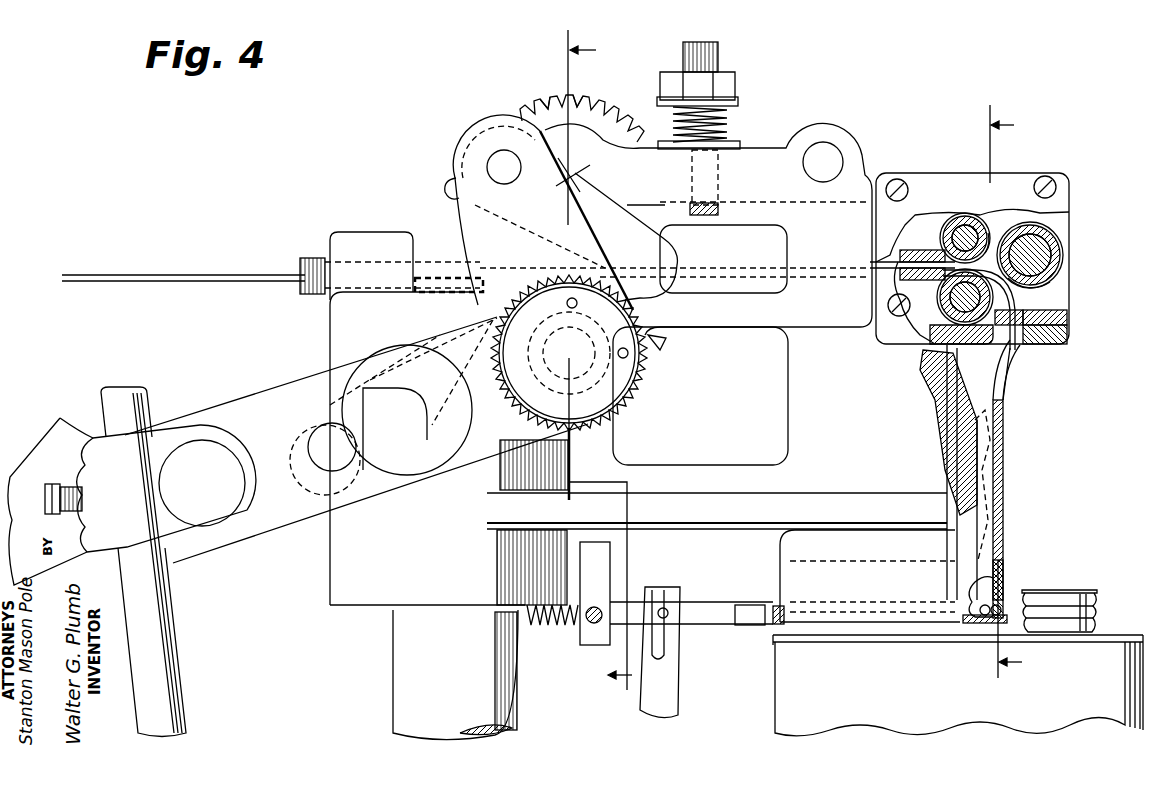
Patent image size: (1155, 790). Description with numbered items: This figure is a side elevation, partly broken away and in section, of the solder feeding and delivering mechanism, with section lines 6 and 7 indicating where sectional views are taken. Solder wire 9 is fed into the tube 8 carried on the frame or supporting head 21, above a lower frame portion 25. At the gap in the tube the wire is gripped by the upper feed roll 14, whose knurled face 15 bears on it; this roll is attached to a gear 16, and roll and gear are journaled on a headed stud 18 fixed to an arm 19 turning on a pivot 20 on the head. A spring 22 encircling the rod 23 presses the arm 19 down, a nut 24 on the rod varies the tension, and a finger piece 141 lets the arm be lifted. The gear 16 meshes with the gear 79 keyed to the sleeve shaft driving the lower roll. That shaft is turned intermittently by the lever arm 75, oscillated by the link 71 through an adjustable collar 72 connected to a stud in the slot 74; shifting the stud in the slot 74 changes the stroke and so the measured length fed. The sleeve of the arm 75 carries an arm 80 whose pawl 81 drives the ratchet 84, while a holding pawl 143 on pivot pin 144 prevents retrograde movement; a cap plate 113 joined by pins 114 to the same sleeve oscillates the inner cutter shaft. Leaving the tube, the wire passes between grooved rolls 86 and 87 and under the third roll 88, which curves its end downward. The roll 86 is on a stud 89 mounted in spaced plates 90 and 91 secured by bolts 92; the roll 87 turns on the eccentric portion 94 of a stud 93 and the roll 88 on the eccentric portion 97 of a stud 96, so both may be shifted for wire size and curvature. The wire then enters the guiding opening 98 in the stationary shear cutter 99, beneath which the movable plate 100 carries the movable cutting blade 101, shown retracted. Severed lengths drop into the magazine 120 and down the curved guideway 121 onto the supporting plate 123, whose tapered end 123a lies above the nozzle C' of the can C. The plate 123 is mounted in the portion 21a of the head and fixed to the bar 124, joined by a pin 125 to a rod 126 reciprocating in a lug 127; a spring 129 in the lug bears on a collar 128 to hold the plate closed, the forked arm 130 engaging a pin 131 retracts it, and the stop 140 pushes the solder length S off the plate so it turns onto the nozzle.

The section line 7- 7 is at (600, 369).
The depression 6 is at (1006, 397).
The rod 23 is at (697, 44).
The nut 24 is at (730, 76).
The spring 22 is at (730, 122).
The arm 19 is at (745, 157).
The pivot 20 is at (832, 158).
The supporting headed stud 18 is at (584, 172).
The upper feed roll 14 is at (603, 128).
The knurled face 15 is at (590, 108).
The gear 16 is at (548, 108).
The finger piece 141 is at (445, 182).
The arm 80 is at (470, 214).
The pawl 81 is at (638, 249).
The solder wire 9 is at (163, 275).
The tube 8 is at (308, 258).
The base block 25 is at (390, 660).
The lug 127 is at (530, 645).
The frame or supporting head 21 is at (800, 373).
The portion of head 21a is at (945, 551).
The cap plate 113 is at (605, 388).
The gear 79 is at (655, 370).
The pins 114 is at (567, 304).
The second ratchet 84 is at (667, 343).
The holding pawl 143 is at (445, 340).
The lever arm 75 is at (238, 405).
The adjustable collar 72 is at (100, 462).
The slot 74 is at (364, 400).
The supporting pivot pin 144 is at (325, 440).
The link 71 is at (165, 630).
The plate 90 is at (1062, 225).
The plate 91 is at (900, 178).
The bolts 92 is at (1047, 178).
The roll 87 is at (963, 213).
The stud 93 is at (968, 225).
The eccentric portion 94 is at (986, 236).
The stud 96 is at (1066, 255).
The third roll 88 is at (1056, 266).
The eccentric portion 97 is at (1046, 286).
The roll 86 is at (958, 300).
The supporting stud 89 is at (965, 310).
The stationary shear cutter 99 is at (1067, 316).
The guiding opening 98 is at (1067, 332).
The movable plate 100 is at (1045, 346).
The movable cutting blade 101 is at (1014, 362).
The guide chute or magazine 120 is at (1006, 452).
The guideway 121 is at (993, 500).
The stop 140 is at (965, 589).
The solder length S is at (1006, 592).
The supporting plate or gate 123 is at (972, 626).
The tapered delivery end 123a is at (1007, 626).
The container C is at (958, 665).
The nozzle C' is at (1059, 591).
The rod 126 is at (703, 600).
The bar 124 is at (780, 604).
The pin 125 is at (748, 626).
The collar 128 is at (600, 646).
The spring 129 is at (557, 628).
The arm 130 is at (665, 675).
The pin 131 is at (663, 607).